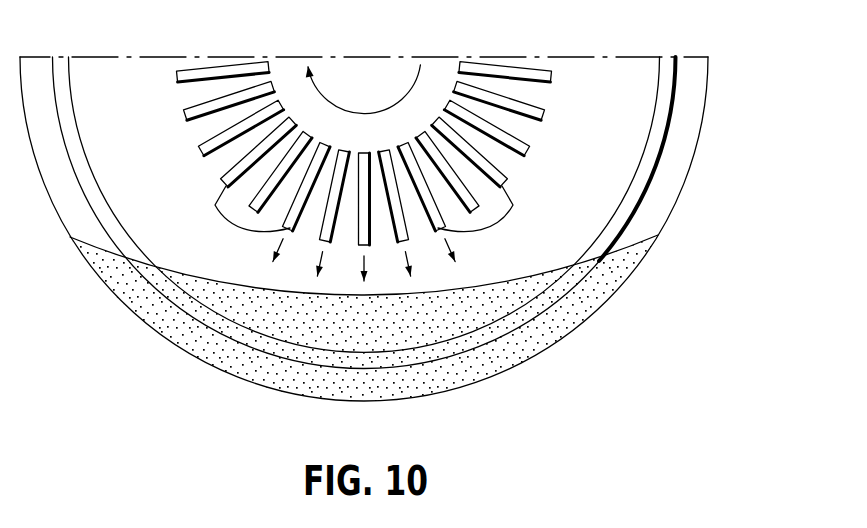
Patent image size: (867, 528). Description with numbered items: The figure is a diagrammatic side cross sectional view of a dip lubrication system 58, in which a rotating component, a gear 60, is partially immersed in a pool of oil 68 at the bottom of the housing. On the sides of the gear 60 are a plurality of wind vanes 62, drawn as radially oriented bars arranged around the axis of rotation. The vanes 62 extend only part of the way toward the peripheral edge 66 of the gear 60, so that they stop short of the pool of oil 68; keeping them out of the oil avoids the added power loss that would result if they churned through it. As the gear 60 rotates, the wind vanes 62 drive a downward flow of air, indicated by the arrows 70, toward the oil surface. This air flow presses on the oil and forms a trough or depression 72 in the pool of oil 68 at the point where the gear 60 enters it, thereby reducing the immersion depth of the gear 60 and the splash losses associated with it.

The dip lubrication system 58 is at (79, 282).
The gear 60 is at (672, 138).
The wind vanes 62 is at (215, 205).
The peripheral edge 66 is at (358, 369).
The pool of oil 68 is at (157, 323).
The arrows 70 is at (276, 249).
The trough or depression 72 is at (383, 295).